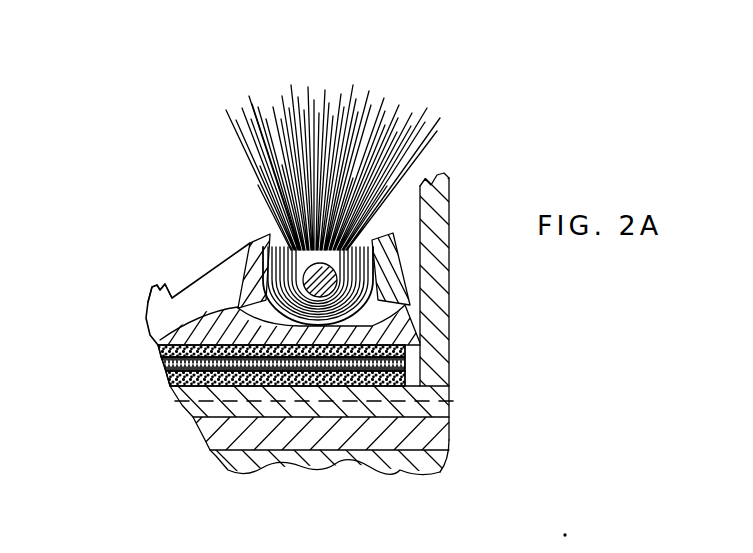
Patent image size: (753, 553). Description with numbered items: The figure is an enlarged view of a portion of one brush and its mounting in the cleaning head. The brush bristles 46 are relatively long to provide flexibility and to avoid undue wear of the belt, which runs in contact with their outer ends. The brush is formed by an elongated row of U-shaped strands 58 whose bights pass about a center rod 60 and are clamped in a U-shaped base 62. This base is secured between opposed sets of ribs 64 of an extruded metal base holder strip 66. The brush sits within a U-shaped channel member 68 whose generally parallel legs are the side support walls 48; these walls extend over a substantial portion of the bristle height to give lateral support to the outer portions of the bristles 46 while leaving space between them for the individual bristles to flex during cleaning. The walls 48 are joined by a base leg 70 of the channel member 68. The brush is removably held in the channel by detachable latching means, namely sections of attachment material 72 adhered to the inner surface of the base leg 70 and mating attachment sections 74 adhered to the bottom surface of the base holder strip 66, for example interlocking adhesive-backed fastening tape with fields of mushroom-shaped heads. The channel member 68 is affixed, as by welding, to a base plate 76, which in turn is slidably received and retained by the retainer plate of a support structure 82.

The bristles 46 is at (348, 100).
The U-shaped strands 58 is at (275, 183).
The center rod 60 is at (315, 277).
The ribs 64 is at (248, 287).
The U-shaped base 62 is at (362, 313).
The base holder strip 66 is at (142, 346).
The attachment sections 74 is at (162, 355).
The sections of attachment material 72 is at (172, 392).
The base plate 76 is at (430, 437).
The base leg 70 is at (261, 410).
The support structure 82 is at (407, 464).
The side support walls 48 is at (452, 222).
The U-shaped channel member 68 is at (455, 170).